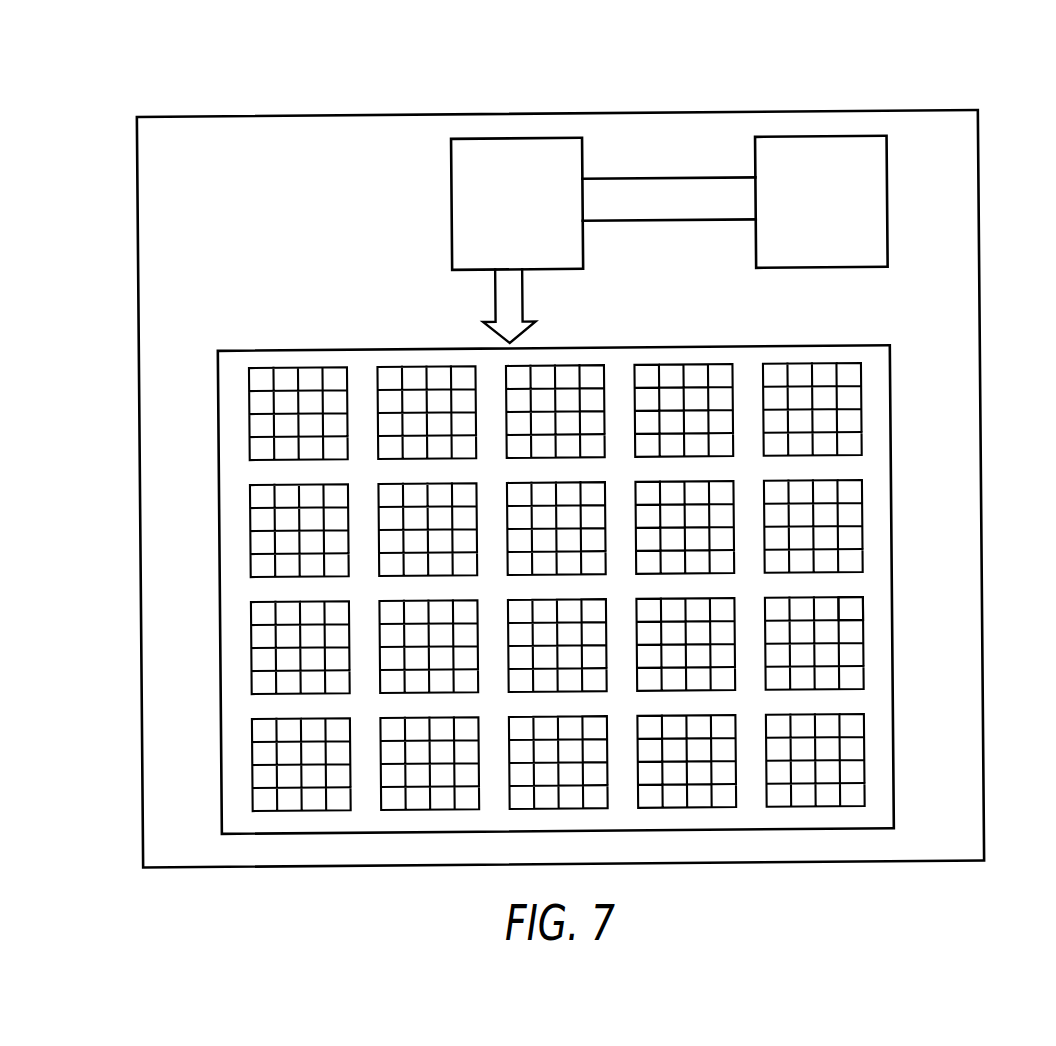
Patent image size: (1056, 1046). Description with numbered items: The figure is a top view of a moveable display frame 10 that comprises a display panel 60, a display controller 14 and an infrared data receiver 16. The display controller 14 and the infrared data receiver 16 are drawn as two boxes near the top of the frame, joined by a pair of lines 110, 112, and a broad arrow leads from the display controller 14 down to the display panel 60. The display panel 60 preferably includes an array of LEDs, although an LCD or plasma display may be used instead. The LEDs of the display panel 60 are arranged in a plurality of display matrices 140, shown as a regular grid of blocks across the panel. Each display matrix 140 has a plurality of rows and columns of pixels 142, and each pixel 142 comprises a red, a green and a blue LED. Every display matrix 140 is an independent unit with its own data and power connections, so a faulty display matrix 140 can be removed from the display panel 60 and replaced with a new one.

The moveable display frame 10 is at (953, 454).
The display controller 14 is at (516, 167).
The infrared data receiver 16 is at (825, 167).
The display panel 60 is at (589, 564).
The first signal line 110 is at (635, 178).
The second signal line 112 is at (634, 222).
The display matrix 140 is at (861, 664).
The pixel 142 is at (849, 612).